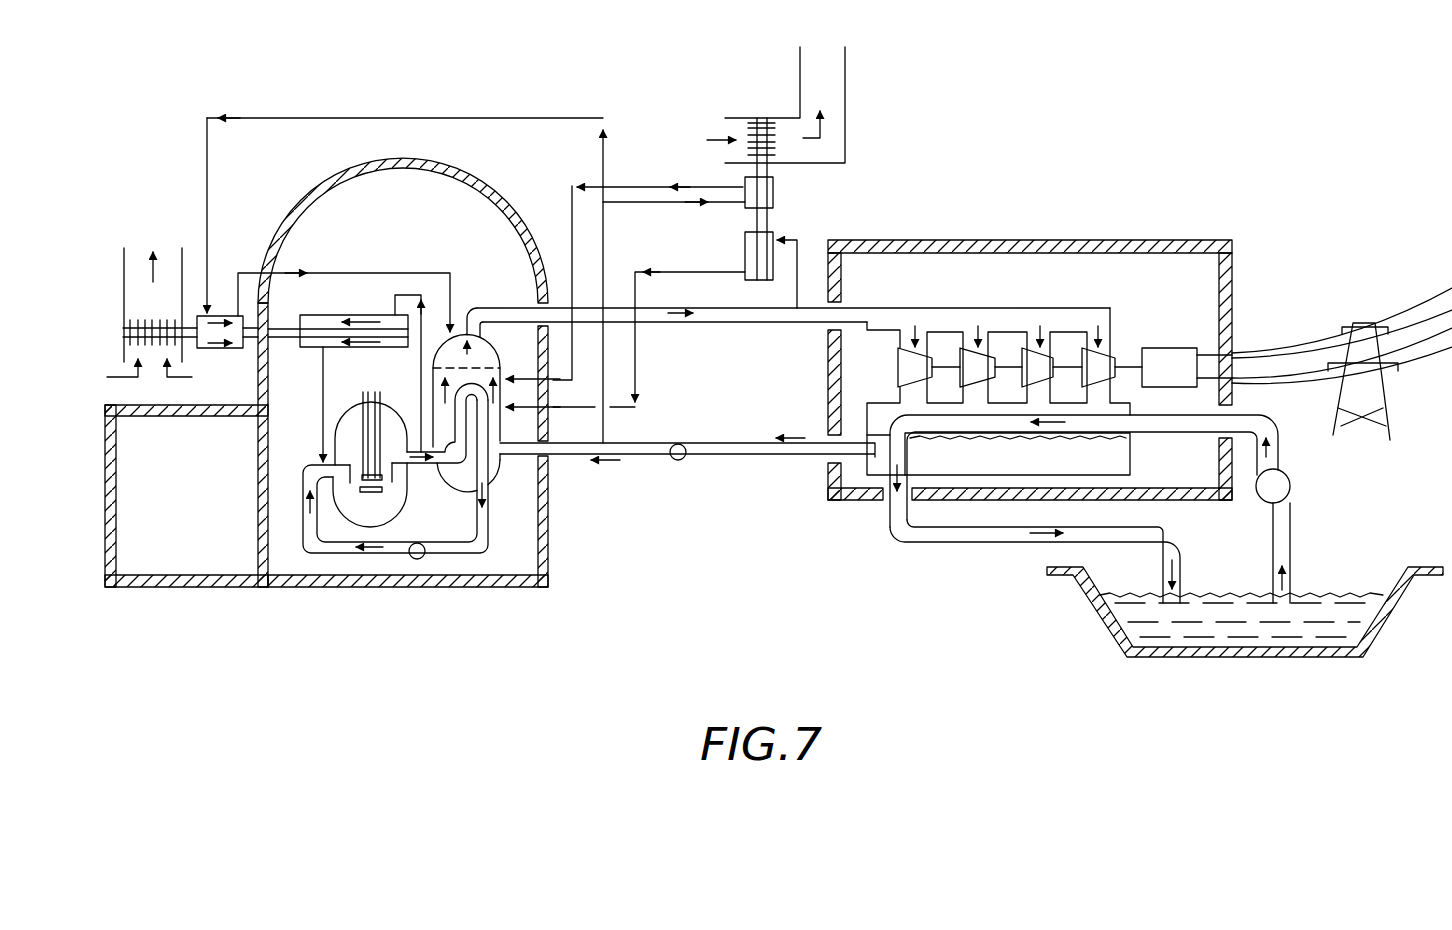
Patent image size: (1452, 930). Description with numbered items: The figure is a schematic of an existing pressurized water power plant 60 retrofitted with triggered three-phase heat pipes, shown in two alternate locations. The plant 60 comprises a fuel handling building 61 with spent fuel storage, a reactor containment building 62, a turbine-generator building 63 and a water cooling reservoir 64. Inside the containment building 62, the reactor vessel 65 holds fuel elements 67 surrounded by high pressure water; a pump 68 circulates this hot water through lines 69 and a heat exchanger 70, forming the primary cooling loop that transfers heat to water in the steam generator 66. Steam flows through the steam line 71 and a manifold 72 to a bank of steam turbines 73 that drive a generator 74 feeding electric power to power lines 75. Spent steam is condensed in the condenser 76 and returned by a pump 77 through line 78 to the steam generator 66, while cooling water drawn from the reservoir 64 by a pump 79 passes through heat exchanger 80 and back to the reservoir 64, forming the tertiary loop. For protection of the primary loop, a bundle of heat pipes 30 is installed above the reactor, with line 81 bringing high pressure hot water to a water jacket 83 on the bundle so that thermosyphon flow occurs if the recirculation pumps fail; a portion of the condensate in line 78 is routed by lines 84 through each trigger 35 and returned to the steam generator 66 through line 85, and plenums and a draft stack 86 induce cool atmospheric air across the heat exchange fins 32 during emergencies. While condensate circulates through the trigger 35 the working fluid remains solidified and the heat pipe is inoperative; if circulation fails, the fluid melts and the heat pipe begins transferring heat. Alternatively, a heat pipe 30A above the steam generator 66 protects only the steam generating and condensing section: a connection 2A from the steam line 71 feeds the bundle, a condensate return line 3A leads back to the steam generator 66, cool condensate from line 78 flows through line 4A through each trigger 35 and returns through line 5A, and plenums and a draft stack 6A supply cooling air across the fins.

The power plant 60 is at (482, 109).
The lines 84 is at (207, 170).
The plenums and draft stack 86 is at (181, 262).
The heat exchange fins 32 is at (165, 322).
The trigger 35 is at (226, 316).
The line 85 is at (338, 273).
The triggered three-phase heat pipes 30 is at (313, 347).
The water jacket 83 is at (350, 315).
The line 81 is at (401, 296).
The fuel elements 67 is at (383, 420).
The reactor vessel 65 is at (402, 497).
The lines 69 is at (490, 551).
The steam generator 66 is at (492, 468).
The pump 68 is at (418, 560).
The heat exchanger 70 is at (495, 372).
The reactor containment building 62 is at (298, 605).
The fuel handling building 61 is at (175, 605).
The line 5A is at (572, 215).
The line 4A is at (644, 203).
The condensate return line 3A is at (636, 362).
The connection 2A is at (800, 252).
The plenums and draft stack 6A is at (846, 68).
The three-phase heat pipe 30A is at (768, 165).
The steam line 71 is at (726, 326).
The line 78 is at (744, 456).
The pump 77 is at (678, 461).
The turbine-generator building 63 is at (1075, 240).
The manifold 72 is at (935, 316).
The steam turbines 73 is at (898, 367).
The generator 74 is at (1162, 348).
The power lines 75 is at (1298, 343).
The heat exchanger 80 is at (1148, 425).
The condenser 76 is at (1122, 467).
The pump 79 is at (1291, 487).
The water cooling reservoir 64 is at (1108, 621).